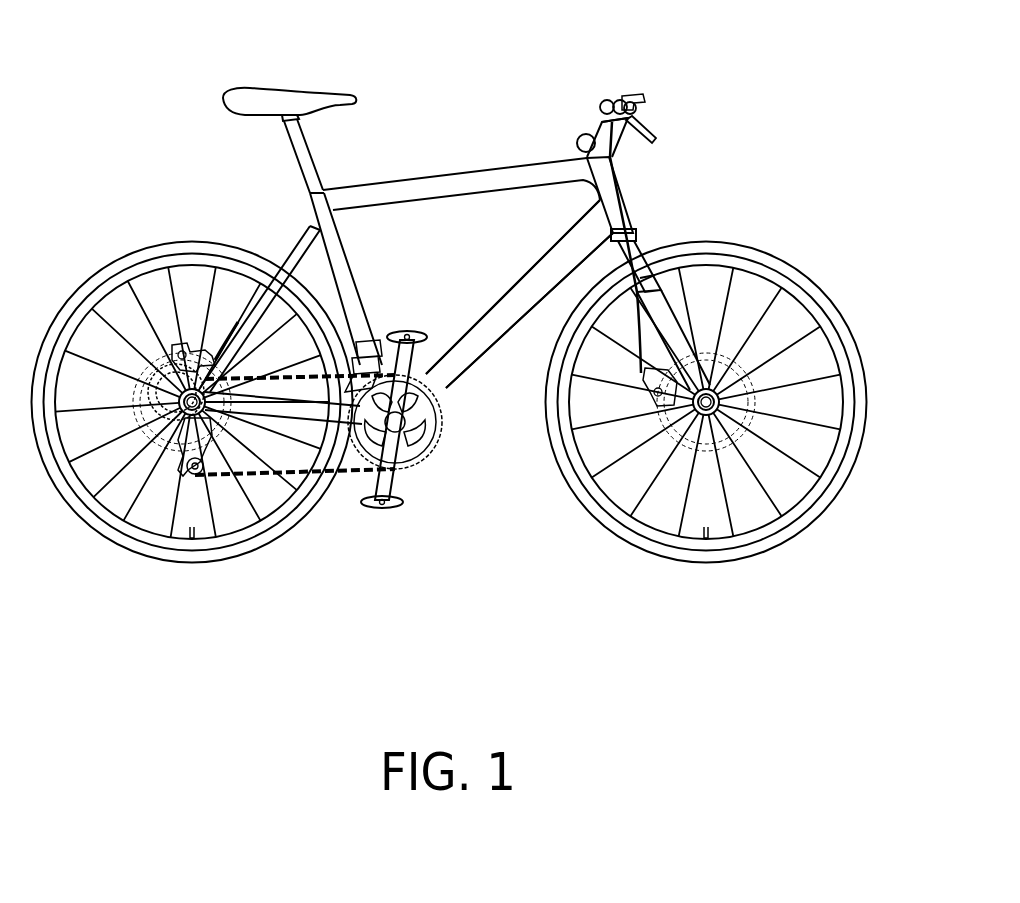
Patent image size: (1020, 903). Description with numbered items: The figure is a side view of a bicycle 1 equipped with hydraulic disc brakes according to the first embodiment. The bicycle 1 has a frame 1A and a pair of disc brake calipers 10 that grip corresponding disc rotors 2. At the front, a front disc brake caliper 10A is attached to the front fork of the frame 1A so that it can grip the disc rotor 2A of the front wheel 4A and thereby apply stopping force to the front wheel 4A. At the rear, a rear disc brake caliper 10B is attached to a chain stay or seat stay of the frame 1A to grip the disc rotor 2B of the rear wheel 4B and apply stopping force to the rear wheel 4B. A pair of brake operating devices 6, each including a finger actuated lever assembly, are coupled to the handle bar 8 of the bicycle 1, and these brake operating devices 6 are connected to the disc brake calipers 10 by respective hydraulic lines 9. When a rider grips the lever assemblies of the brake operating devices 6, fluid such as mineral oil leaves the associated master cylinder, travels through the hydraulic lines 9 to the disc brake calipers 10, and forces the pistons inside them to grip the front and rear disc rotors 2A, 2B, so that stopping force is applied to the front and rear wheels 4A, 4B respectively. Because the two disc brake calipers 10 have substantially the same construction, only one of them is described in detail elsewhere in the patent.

The bicycle 1 is at (474, 48).
The frame 1A is at (546, 259).
The disc rotors 2 is at (387, 627).
The disc rotor of front wheel 2A is at (625, 478).
The disc rotor of rear wheel 2B is at (318, 482).
The front wheel 4A is at (770, 260).
The rear wheel 4B is at (108, 267).
The brake operating devices 6 is at (672, 109).
The handle bar 8 is at (613, 100).
The hydraulic lines 9 is at (617, 150).
The disc brake calipers 10 is at (372, 287).
The front disc brake caliper 10A is at (648, 383).
The rear disc brake caliper 10B is at (188, 347).